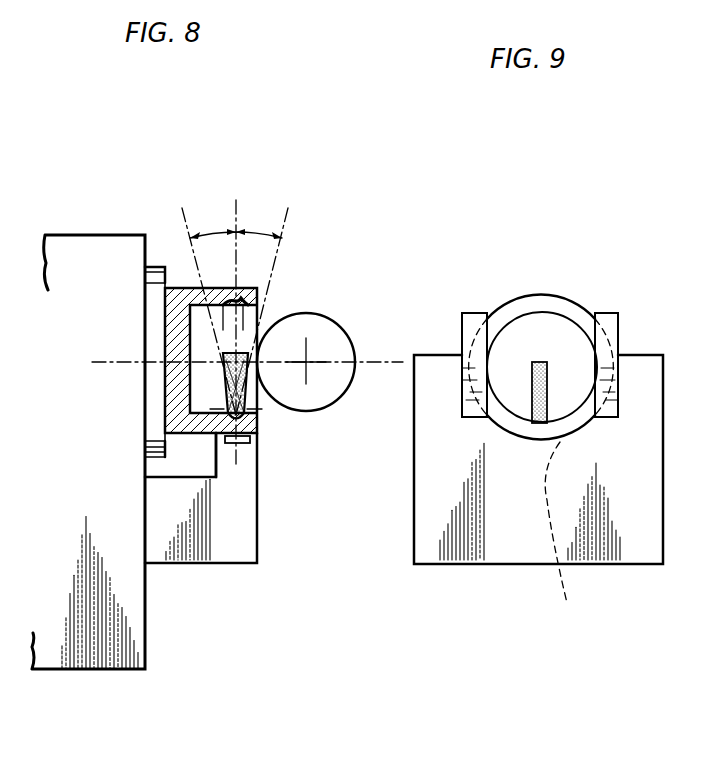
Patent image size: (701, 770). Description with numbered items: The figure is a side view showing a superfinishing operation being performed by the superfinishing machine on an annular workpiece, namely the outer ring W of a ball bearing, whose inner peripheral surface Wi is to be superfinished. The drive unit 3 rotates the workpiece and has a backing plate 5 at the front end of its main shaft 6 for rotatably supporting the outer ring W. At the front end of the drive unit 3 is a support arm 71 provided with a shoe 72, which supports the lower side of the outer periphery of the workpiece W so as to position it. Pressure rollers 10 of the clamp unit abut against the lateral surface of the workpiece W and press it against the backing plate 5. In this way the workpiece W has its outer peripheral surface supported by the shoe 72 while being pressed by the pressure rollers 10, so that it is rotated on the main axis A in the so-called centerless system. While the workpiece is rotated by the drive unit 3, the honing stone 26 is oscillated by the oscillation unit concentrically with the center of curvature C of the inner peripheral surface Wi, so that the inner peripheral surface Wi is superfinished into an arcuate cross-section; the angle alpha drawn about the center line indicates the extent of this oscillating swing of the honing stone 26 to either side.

In FIG. 8, the drive unit 3 is at (112, 671).
In FIG. 8, the backing plate 5 is at (183, 298).
In FIG. 8, the main shaft 6 is at (155, 278).
In FIG. 8, the pressure rollers 10 is at (333, 333).
In FIG. 9, the pressure rollers 10 is at (470, 320).
In FIG. 8, the honing stone 26 is at (247, 402).
In FIG. 9, the honing stone 26 is at (548, 383).
In FIG. 8, the support arm 71 is at (232, 552).
In FIG. 9, the support arm 71 is at (627, 557).
In FIG. 8, the shoe 72 is at (230, 428).
In FIG. 9, the shoe 72 is at (566, 542).
In FIG. 8, the outer ring W is at (220, 440).
In FIG. 9, the outer ring W is at (541, 296).
In FIG. 8, the inner peripheral surface Wi is at (258, 313).
In FIG. 9, the inner peripheral surface Wi is at (522, 417).
In FIG. 8, the center of curvature C is at (243, 430).
In FIG. 8, the main axis A is at (399, 359).
In FIG. 8, the angle alpha is at (235, 308).